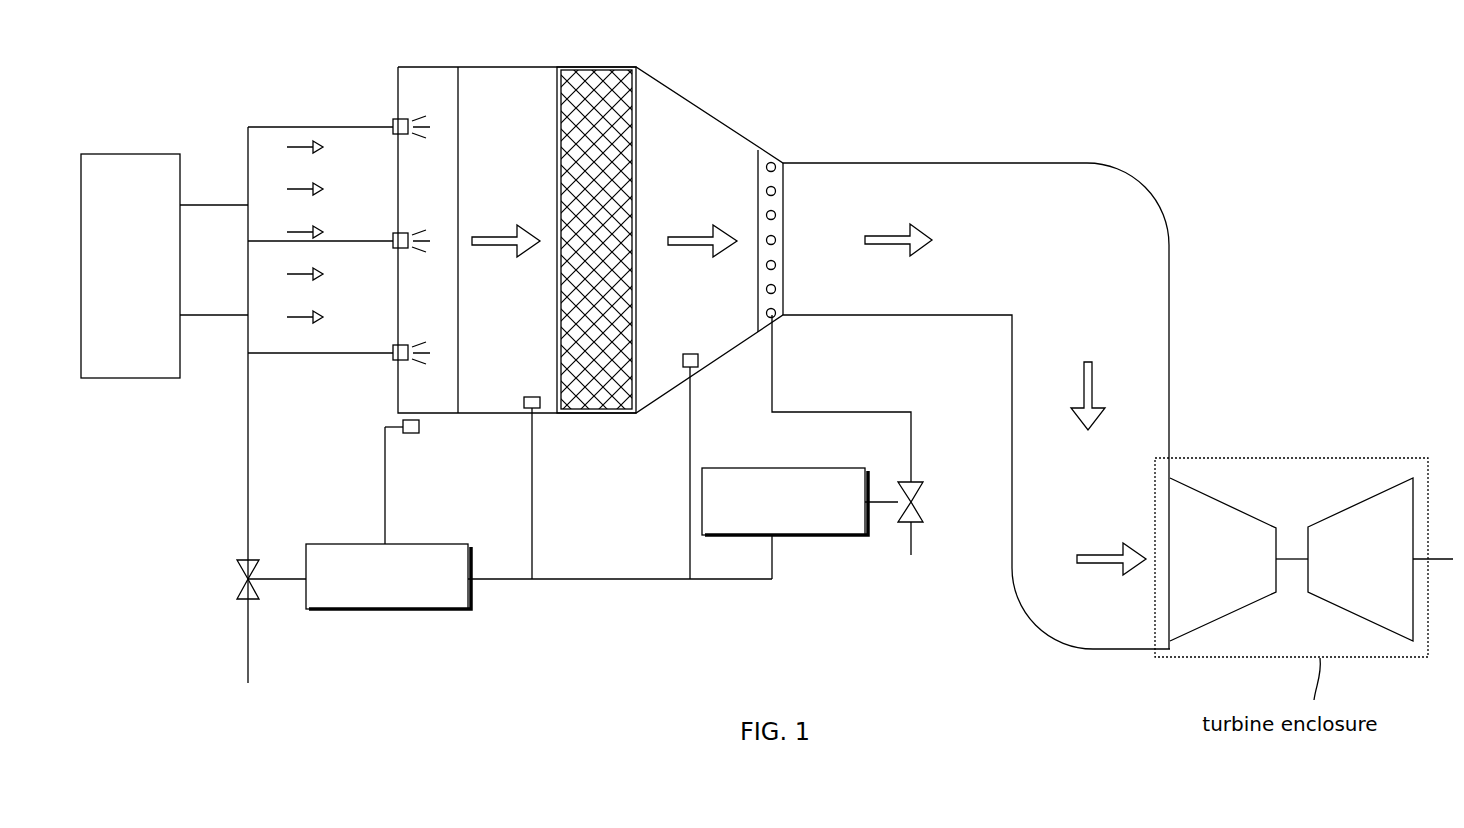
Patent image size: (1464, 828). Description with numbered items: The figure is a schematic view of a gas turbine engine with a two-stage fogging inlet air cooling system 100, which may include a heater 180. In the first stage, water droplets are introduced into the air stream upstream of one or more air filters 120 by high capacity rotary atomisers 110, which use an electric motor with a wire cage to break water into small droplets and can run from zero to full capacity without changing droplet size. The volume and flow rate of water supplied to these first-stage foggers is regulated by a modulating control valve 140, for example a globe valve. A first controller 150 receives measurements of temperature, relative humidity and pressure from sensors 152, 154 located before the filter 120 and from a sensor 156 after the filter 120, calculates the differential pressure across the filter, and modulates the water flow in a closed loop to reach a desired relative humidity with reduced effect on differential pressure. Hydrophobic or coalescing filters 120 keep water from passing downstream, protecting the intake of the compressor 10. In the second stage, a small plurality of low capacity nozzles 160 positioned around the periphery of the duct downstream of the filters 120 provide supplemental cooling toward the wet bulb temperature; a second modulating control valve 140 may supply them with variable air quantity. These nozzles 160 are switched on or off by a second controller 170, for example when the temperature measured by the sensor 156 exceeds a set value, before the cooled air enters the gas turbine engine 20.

The inlet air cooling system 100 is at (753, 70).
The high capacity rotary atomisers 110 is at (393, 352).
The air filters 120 is at (596, 73).
The modulating control valve 140 is at (254, 597).
The first controller 150 is at (450, 613).
The sensor 152 is at (420, 427).
The sensor 154 is at (532, 397).
The sensor 156 is at (690, 354).
The low capacity nozzles 160 is at (783, 160).
The second controller 170 is at (843, 538).
The heater 180 is at (160, 390).
The compressor 10 is at (1231, 503).
The gas turbine engine 20 is at (1373, 495).